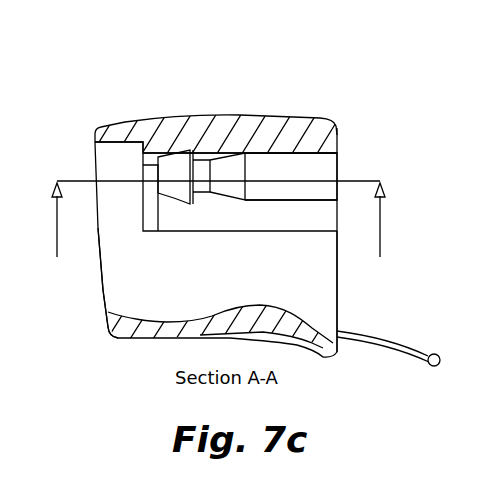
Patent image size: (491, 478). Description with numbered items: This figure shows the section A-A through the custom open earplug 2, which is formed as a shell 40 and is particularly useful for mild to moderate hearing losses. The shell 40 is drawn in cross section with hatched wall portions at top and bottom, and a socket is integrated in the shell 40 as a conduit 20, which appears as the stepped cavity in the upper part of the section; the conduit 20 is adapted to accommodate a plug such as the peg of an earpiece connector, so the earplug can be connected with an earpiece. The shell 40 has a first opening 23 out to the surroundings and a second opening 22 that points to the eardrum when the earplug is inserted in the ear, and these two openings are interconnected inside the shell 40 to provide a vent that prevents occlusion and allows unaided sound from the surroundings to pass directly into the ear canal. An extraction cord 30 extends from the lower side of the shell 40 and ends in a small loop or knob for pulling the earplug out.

The custom open earplug 2 is at (251, 90).
The shell 40 is at (147, 116).
The conduit 20 is at (340, 167).
The first opening 23 is at (340, 291).
The second opening 22 is at (103, 286).
The extraction cord 30 is at (353, 337).